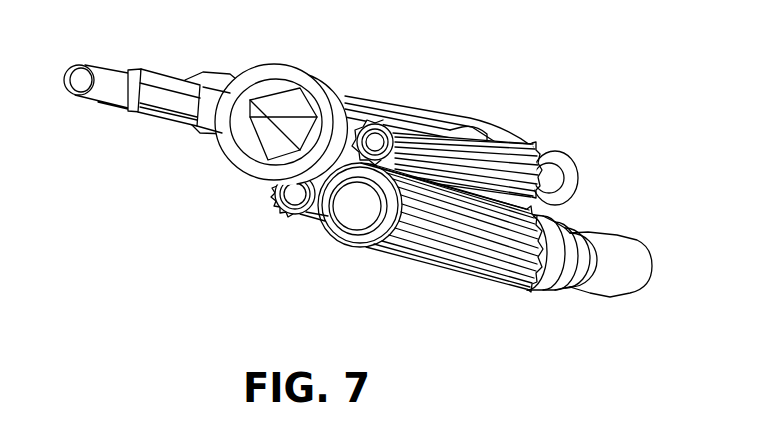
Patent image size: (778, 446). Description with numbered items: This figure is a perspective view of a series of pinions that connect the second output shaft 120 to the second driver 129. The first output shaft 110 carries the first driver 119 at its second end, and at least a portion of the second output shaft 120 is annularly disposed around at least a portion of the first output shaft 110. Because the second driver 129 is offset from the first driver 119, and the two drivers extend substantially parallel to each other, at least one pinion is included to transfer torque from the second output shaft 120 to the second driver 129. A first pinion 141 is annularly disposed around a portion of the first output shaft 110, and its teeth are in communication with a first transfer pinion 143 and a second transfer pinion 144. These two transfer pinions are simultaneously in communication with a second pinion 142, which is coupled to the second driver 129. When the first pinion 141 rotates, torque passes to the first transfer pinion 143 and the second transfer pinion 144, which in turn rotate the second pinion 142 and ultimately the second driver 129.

The first output shaft 110 is at (82, 73).
The second output shaft 120 is at (257, 85).
The first pinion 141 is at (385, 107).
The first transfer pinion 143 is at (450, 147).
The first driver 119 is at (576, 165).
The second driver 129 is at (650, 262).
The second transfer pinion 144 is at (312, 214).
The second pinion 142 is at (463, 253).